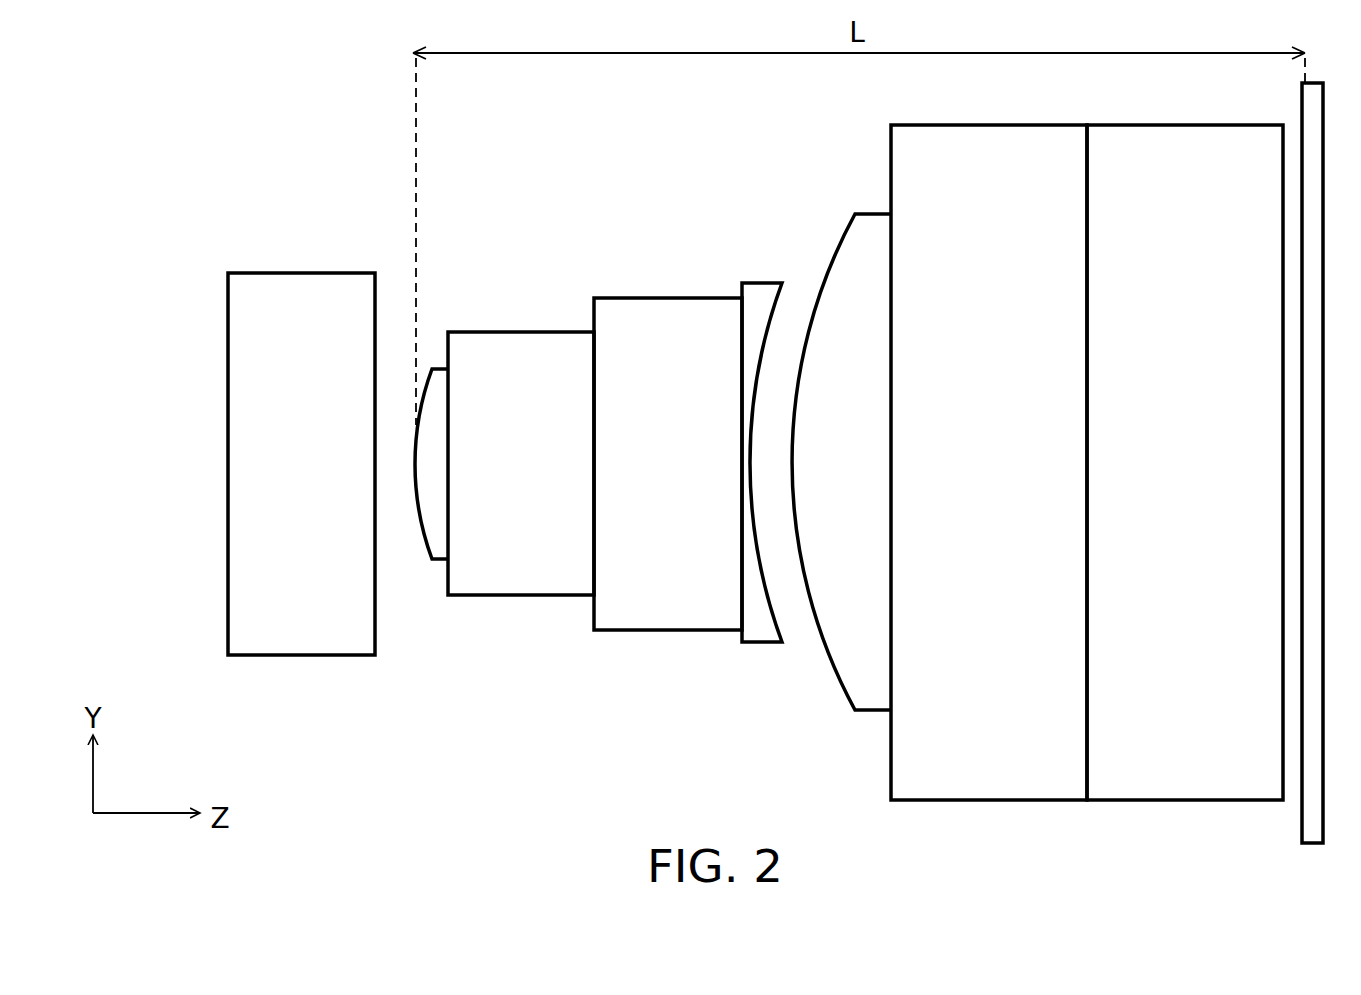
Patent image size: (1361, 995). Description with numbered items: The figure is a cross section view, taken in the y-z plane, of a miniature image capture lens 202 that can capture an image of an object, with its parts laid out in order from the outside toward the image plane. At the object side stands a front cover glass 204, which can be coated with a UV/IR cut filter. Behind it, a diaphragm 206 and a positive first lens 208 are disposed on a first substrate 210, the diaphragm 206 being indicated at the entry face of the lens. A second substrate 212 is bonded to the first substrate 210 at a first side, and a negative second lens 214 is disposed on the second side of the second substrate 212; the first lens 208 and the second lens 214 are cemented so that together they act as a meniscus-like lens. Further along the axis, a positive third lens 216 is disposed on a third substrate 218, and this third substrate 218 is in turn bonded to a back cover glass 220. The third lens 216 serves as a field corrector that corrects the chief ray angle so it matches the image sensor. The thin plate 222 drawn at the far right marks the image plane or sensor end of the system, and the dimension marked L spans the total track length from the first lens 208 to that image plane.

The miniature image capture lens 202 is at (168, 173).
The front cover glass 204 is at (302, 656).
The diaphragm 206 is at (432, 352).
The first lens 208 is at (427, 542).
The first substrate 210 is at (523, 596).
The second substrate 212 is at (670, 631).
The second lens 214 is at (770, 626).
The third lens 216 is at (839, 687).
The third substrate 218 is at (985, 802).
The back cover glass 220 is at (1157, 802).
The image plane / sensor 222 is at (1298, 812).